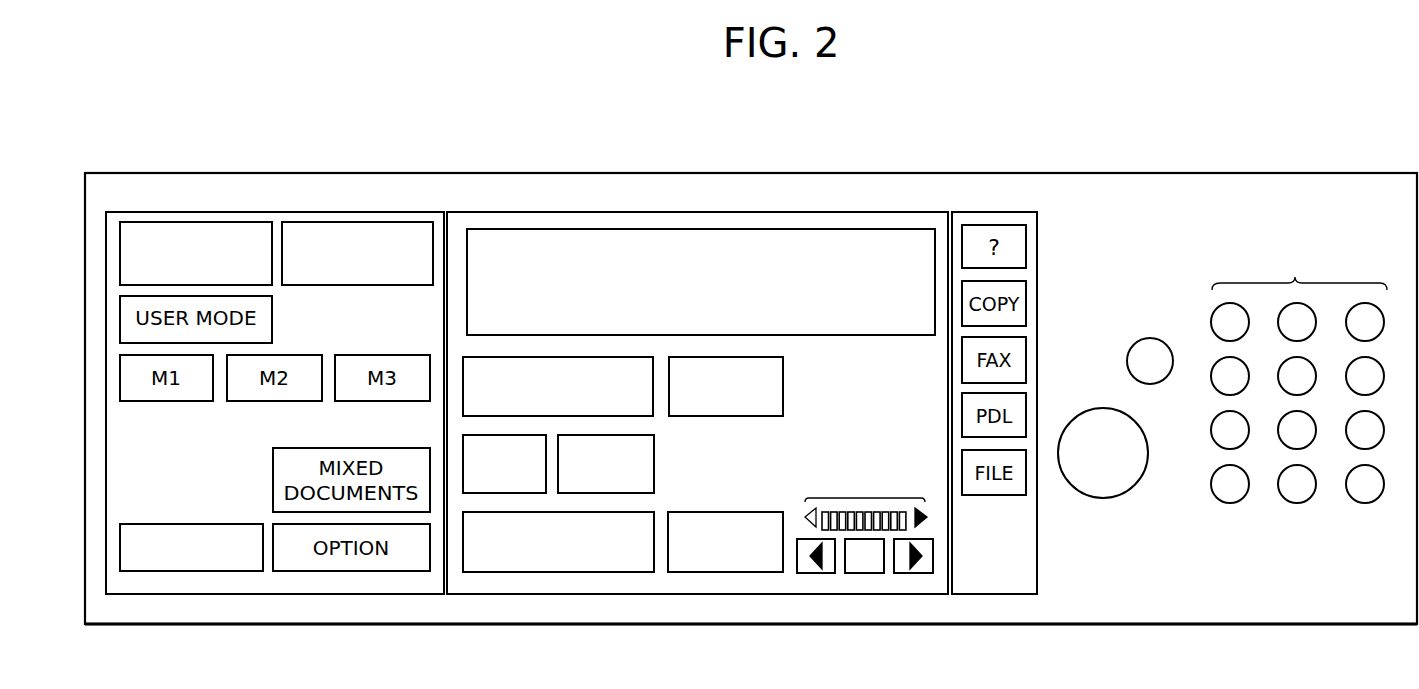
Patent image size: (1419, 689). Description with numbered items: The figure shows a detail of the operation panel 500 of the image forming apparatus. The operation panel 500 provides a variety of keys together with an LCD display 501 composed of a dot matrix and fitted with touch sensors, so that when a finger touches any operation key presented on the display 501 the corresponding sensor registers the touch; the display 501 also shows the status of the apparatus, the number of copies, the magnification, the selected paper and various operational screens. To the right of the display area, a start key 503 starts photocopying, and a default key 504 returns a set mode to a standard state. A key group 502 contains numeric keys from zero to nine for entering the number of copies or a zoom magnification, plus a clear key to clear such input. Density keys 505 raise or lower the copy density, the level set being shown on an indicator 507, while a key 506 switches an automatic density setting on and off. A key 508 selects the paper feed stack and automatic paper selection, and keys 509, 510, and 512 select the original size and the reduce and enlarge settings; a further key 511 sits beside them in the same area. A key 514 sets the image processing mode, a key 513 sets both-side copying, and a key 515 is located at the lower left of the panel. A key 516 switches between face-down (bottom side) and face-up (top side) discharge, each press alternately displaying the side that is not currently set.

The operation panel 500 is at (673, 173).
The LCD display 501 is at (547, 212).
The key group 502 is at (1295, 278).
The start key 503 is at (1100, 408).
The default key 504 is at (1147, 338).
The density keys 505 is at (827, 573).
The automatic density key 506 is at (873, 573).
The indicator 507 is at (868, 498).
The paper selection key 508 is at (783, 386).
The original size key 509 is at (463, 383).
The reduce key 510 is at (463, 478).
The zoom key 511 is at (546, 572).
The enlarge key 512 is at (654, 464).
The both-side copying key 513 is at (182, 222).
The image processing mode key 514 is at (337, 222).
The sorter key 515 is at (193, 571).
The discharge switching key 516 is at (721, 572).